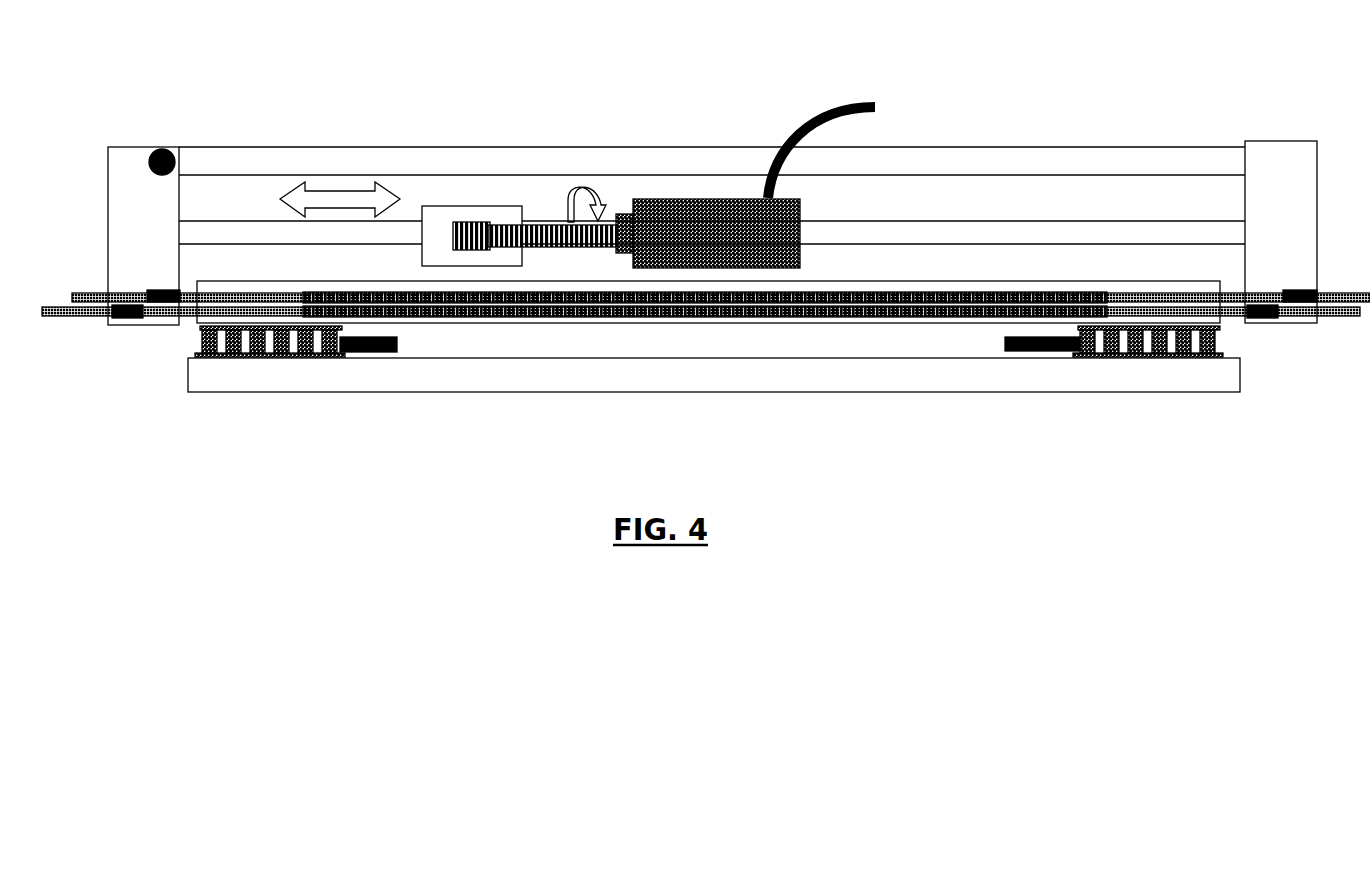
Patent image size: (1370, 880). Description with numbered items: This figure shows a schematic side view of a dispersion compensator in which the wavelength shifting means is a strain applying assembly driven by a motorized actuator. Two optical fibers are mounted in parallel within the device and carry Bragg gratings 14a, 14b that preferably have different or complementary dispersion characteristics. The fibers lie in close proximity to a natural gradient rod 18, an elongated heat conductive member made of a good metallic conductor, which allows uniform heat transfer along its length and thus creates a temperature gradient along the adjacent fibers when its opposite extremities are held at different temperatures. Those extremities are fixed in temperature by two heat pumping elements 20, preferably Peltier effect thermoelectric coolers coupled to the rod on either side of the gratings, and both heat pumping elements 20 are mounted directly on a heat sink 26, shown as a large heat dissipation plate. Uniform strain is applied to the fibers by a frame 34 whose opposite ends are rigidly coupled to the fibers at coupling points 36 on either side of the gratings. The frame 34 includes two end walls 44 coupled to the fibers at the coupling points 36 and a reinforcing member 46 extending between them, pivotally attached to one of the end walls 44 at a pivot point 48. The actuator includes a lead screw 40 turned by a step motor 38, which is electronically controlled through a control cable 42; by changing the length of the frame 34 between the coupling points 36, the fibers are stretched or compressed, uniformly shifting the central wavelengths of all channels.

The Bragg grating 14a is at (557, 315).
The Bragg grating 14b is at (965, 312).
The natural gradient rod 18 is at (620, 320).
The heat pumping elements 20 is at (268, 350).
The heat sink 26 is at (845, 368).
The frame 34 is at (712, 144).
The coupling points 36 is at (172, 303).
The step motor 38 is at (693, 198).
The lead screw 40 is at (541, 224).
The control cable 42 is at (857, 100).
The end walls 44 is at (113, 235).
The reinforcing member 46 is at (1162, 157).
The pivot point 48 is at (172, 152).